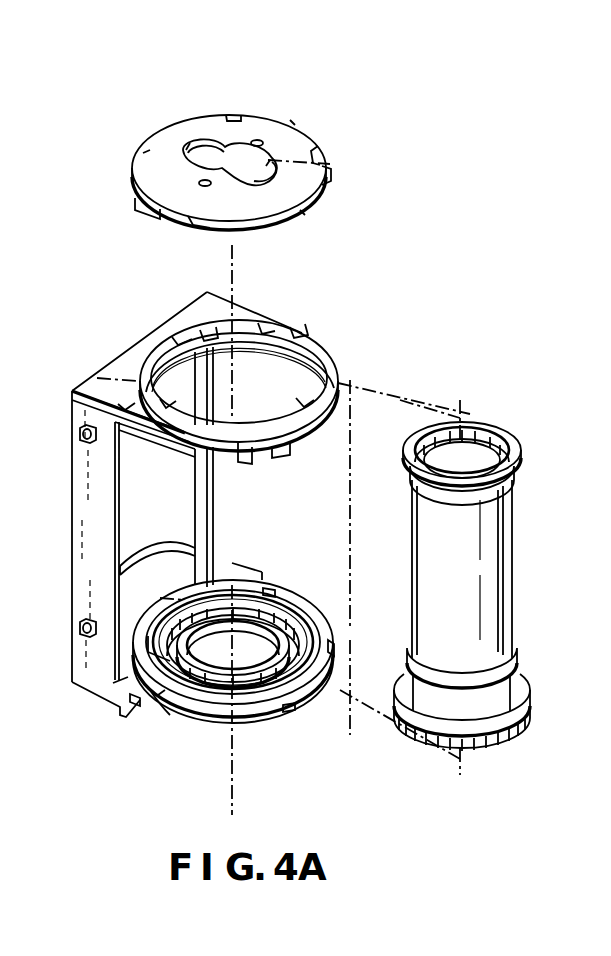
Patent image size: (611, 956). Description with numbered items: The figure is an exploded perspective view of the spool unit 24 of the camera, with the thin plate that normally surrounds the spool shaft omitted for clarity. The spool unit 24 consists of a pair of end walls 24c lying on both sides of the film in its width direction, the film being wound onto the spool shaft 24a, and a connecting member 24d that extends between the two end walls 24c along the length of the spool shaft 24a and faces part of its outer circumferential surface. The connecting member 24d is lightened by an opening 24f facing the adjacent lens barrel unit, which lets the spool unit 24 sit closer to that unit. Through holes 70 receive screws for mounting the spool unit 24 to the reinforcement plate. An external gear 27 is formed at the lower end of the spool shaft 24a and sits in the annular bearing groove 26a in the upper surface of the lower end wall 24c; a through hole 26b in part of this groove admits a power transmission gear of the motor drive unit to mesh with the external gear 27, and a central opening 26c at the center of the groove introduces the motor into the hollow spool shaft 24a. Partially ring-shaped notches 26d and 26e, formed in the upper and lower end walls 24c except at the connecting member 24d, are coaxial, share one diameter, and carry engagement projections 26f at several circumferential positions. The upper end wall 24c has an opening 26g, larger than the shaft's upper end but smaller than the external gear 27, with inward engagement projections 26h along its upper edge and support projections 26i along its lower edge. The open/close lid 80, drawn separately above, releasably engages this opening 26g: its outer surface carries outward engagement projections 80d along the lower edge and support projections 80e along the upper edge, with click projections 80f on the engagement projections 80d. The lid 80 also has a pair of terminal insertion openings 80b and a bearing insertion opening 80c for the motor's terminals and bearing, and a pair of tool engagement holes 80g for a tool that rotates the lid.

The spool unit 24 is at (212, 529).
The spool shaft 24a is at (503, 593).
The end walls 24c is at (158, 327).
The connecting member 24d is at (215, 510).
The opening 24f is at (155, 550).
The annular bearing groove 26a is at (293, 640).
The through hole 26b is at (145, 693).
The central opening 26c is at (220, 667).
The partially ring-shaped notch 26d is at (237, 452).
The partially ring-shaped notch 26e is at (163, 670).
The engagement projections 26f is at (283, 455).
The opening 26g is at (242, 343).
The engagement projections 26h is at (250, 318).
The support projections 26i is at (210, 337).
The external gear 27 is at (527, 720).
The through holes 70 is at (82, 441).
The open/close lid 80 is at (283, 205).
The terminal insertion openings 80b is at (187, 148).
The bearing insertion opening 80c is at (207, 145).
The engagement projections 80d is at (232, 113).
The support projections 80e is at (290, 120).
The click projections 80f is at (327, 170).
The tool engagement holes 80g is at (257, 140).